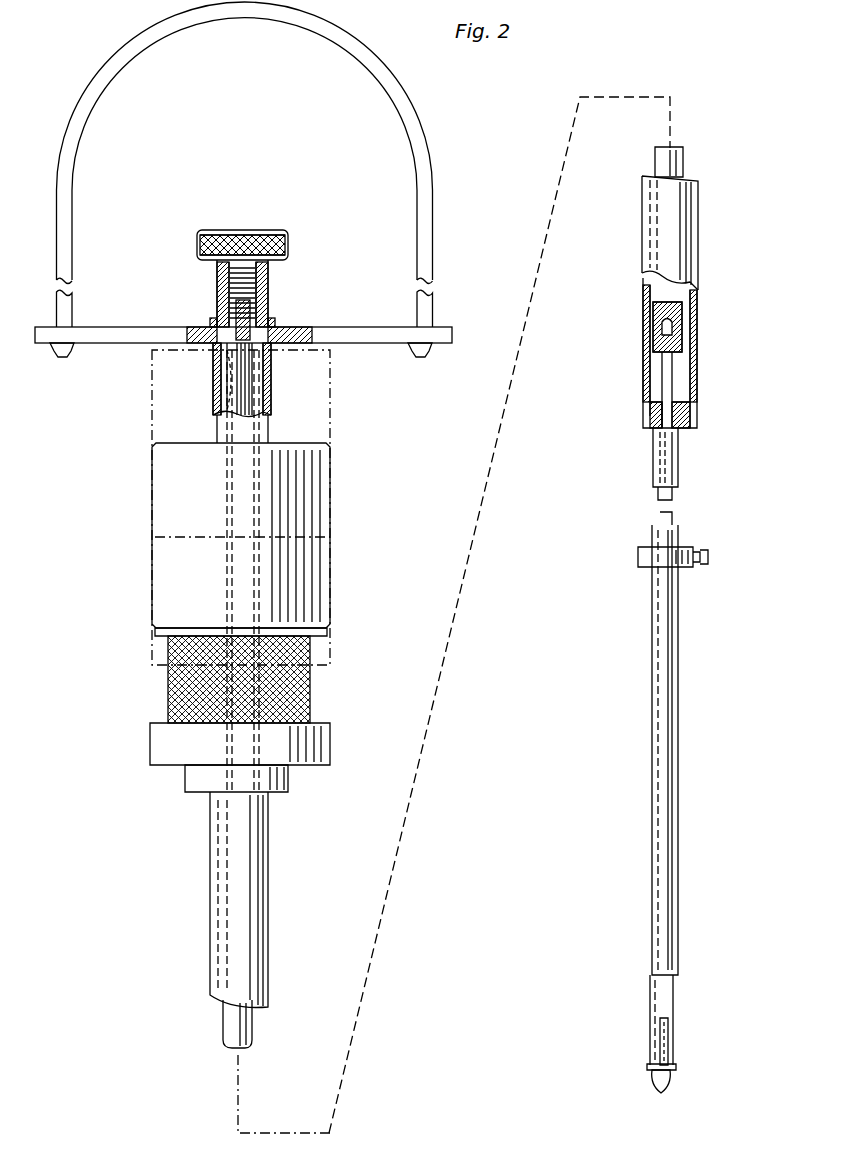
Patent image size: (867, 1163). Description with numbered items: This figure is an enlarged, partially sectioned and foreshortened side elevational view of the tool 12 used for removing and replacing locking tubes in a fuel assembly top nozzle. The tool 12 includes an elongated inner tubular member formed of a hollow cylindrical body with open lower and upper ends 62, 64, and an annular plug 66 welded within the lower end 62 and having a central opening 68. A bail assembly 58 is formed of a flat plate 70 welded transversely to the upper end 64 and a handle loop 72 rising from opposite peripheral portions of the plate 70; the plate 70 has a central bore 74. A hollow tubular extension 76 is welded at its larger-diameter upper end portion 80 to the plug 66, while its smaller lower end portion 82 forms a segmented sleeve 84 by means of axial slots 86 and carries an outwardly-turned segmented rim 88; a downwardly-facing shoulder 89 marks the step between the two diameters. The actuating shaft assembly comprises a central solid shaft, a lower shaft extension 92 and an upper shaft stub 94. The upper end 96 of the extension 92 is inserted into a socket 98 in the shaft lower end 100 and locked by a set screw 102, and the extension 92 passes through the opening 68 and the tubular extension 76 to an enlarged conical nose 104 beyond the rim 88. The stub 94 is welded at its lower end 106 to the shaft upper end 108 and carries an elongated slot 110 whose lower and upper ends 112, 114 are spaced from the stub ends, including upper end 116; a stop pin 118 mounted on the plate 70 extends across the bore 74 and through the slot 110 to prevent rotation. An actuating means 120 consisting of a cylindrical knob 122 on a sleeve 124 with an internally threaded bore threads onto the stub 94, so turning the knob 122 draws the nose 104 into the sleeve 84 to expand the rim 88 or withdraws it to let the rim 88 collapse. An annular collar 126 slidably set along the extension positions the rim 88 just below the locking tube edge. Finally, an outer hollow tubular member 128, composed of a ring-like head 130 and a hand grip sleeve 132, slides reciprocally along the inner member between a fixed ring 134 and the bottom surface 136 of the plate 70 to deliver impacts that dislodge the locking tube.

The tool 12 is at (100, 474).
The bail assembly 58 is at (433, 181).
The lower end 62 is at (692, 406).
The upper end 64 is at (206, 327).
The annular plug 66 is at (688, 430).
The central opening 68 is at (662, 404).
The flat plate 70 is at (105, 347).
The bail or handle loop 72 is at (68, 93).
The central bore 74 is at (271, 365).
The hollow tubular extension 76 is at (652, 462).
The upper end portion 80 is at (653, 446).
The lower end portion 82 is at (675, 992).
The segmented sleeve 84 is at (673, 1048).
The axially-extending slots 86 is at (668, 1020).
The annular segmented flange or rim 88 is at (676, 1068).
The ledge or shoulder 89 is at (652, 975).
The lower shaft extension 92 is at (673, 366).
The upper shaft stub 94 is at (214, 365).
The upper end 96 is at (695, 316).
The internally-disposed socket 98 is at (660, 341).
The lower end 100 is at (652, 318).
The set screw 102 is at (682, 340).
The enlarged conical nose 104 is at (660, 1086).
The lower end 106 is at (222, 376).
The upper end 108 is at (255, 375).
The elongated slot 110 is at (220, 302).
The lower end 112 is at (226, 404).
The upper end 114 is at (220, 286).
The upper end 116 is at (308, 248).
The stop pin 118 is at (268, 314).
The actuating means 120 is at (290, 234).
The cylindrical knob 122 is at (205, 245).
The sleeve 124 is at (262, 290).
The annular collar 126 is at (640, 556).
The outer hollow tubular member 128 is at (330, 584).
The cylindrical ring-like head 130 is at (331, 492).
The hand grip tubular sleeve 132 is at (312, 696).
The ring 134 is at (290, 776).
The bottom surface 136 is at (357, 347).